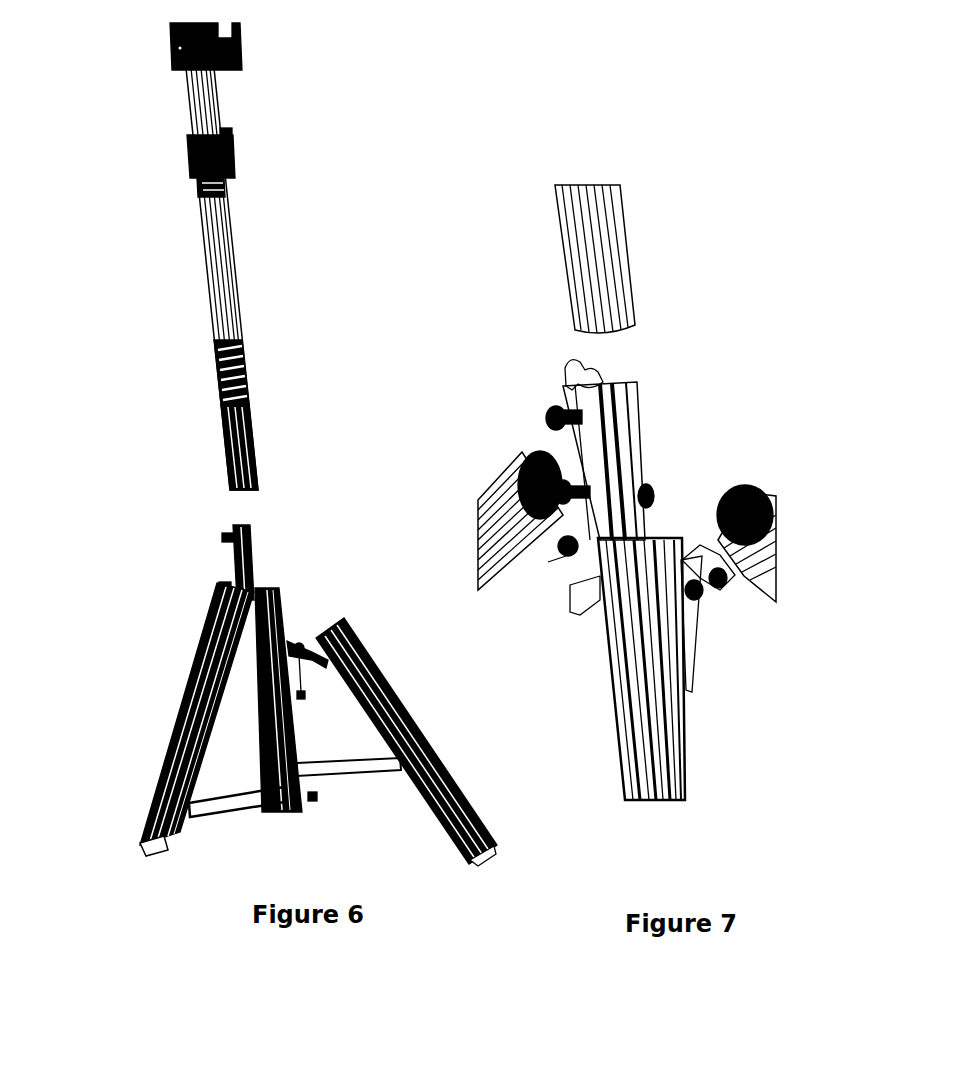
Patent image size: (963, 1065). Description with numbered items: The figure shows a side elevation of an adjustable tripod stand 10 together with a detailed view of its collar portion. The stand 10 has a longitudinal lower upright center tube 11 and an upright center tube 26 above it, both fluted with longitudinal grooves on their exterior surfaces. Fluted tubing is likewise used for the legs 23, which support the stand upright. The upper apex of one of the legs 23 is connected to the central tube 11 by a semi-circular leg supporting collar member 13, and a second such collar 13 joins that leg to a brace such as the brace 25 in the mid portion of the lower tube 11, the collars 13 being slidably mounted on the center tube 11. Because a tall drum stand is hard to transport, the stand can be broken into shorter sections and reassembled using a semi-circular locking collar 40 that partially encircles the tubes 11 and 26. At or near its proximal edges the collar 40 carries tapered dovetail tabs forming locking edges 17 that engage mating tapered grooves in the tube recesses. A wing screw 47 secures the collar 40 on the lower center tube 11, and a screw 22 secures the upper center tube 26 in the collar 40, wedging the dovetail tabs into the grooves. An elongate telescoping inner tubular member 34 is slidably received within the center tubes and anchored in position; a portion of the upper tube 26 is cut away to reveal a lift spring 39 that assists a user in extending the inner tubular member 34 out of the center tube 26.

In FIG. 6, the adjustable tripod stand 10 is at (106, 309).
In FIG. 6, the lower upright center tube 11 is at (283, 596).
In FIG. 7, the lower upright center tube 11 is at (652, 500).
In FIG. 6, the semi-circular leg supporting collar member 13 is at (318, 800).
In FIG. 7, the semi-circular leg supporting collar member 13 is at (736, 586).
In FIG. 7, the locking edges 17 is at (598, 372).
In FIG. 6, the screw 22 is at (226, 532).
In FIG. 7, the screw 22 is at (548, 408).
In FIG. 6, the legs 23 is at (182, 742).
In FIG. 7, the legs 23 is at (478, 500).
In FIG. 6, the brace 25 is at (245, 818).
In FIG. 6, the upright center tube 26 is at (260, 448).
In FIG. 7, the upright center tube 26 is at (630, 240).
In FIG. 6, the telescoping inner tubular member 34 is at (213, 98).
In FIG. 6, the lift spring 39 is at (251, 377).
In FIG. 6, the semi-circular locking collar 40 is at (239, 562).
In FIG. 7, the semi-circular locking collar 40 is at (638, 437).
In FIG. 6, the wing screw 47 is at (222, 588).
In FIG. 7, the wing screw 47 is at (560, 560).